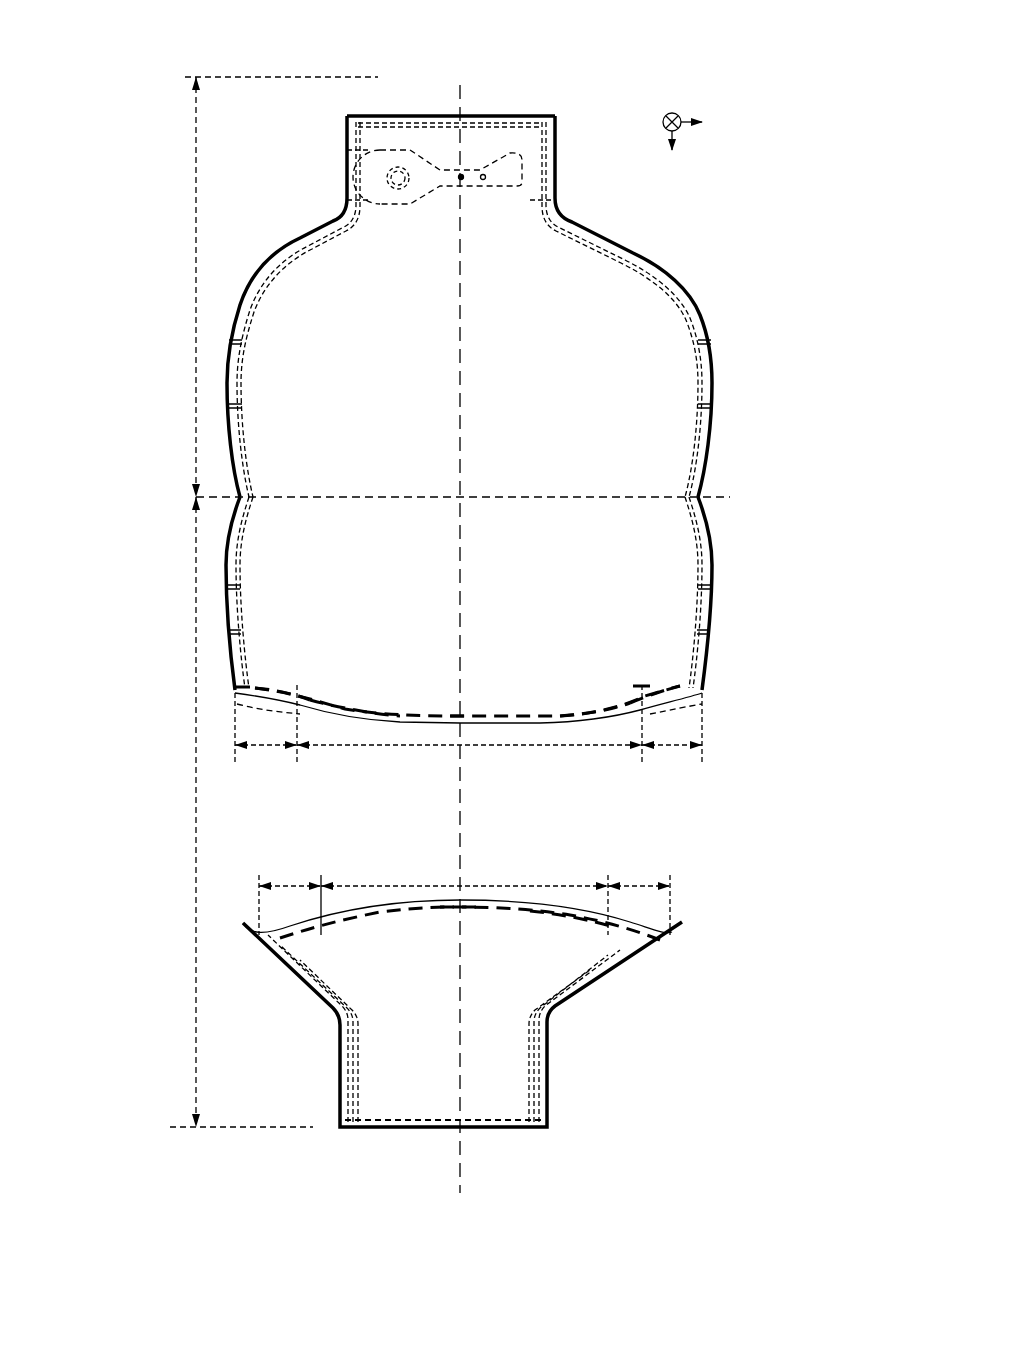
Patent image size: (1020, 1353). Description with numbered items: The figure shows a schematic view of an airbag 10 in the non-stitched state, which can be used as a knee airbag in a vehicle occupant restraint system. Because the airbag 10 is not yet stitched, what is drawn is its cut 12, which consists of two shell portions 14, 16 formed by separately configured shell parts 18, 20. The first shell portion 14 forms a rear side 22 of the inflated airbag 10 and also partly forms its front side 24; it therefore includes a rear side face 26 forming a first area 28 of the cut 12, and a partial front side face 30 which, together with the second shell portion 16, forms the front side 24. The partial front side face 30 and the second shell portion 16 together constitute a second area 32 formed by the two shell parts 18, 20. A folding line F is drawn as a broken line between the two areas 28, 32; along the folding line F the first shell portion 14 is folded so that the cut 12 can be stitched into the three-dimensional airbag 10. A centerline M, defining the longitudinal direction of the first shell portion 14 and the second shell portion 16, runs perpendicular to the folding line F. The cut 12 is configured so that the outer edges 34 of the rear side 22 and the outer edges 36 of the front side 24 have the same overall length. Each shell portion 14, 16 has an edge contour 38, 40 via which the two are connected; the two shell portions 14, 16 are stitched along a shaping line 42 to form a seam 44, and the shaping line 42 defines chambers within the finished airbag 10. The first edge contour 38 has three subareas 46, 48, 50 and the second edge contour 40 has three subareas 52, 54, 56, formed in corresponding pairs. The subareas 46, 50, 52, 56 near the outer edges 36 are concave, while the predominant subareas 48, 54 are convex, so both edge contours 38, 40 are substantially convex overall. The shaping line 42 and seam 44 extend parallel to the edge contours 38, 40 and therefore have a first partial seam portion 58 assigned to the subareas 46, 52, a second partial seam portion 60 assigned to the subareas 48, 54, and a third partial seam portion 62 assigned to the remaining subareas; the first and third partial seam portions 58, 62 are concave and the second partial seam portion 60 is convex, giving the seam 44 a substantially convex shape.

The airbag 10 is at (143, 85).
The cut 12 is at (150, 223).
The first shell portion 14 is at (722, 290).
The second shell portion 16 is at (678, 977).
The shell part 18 is at (708, 372).
The shell part 20 is at (588, 985).
The rear side 22 is at (318, 178).
The front side 24 is at (772, 647).
The rear side face 26 is at (298, 292).
The first area 28 is at (280, 287).
The partial front side face 30 is at (672, 543).
The second area 32 is at (241, 812).
The outer edges 34 is at (240, 395).
The outer edges 36 is at (236, 600).
The edge contour 38 is at (623, 709).
The edge contour 40 is at (548, 912).
The shaping line 42 is at (470, 709).
The seam 44 is at (512, 712).
The subarea 46 is at (266, 757).
The subarea 48 is at (393, 757).
The subarea 50 is at (675, 757).
The subarea 52 is at (293, 878).
The subarea 54 is at (391, 878).
The subarea 56 is at (640, 878).
The first partial seam portion 58 is at (263, 683).
The second partial seam portion 60 is at (340, 697).
The third partial seam portion 62 is at (672, 688).
The folding line F is at (390, 497).
The centerline M is at (461, 1163).